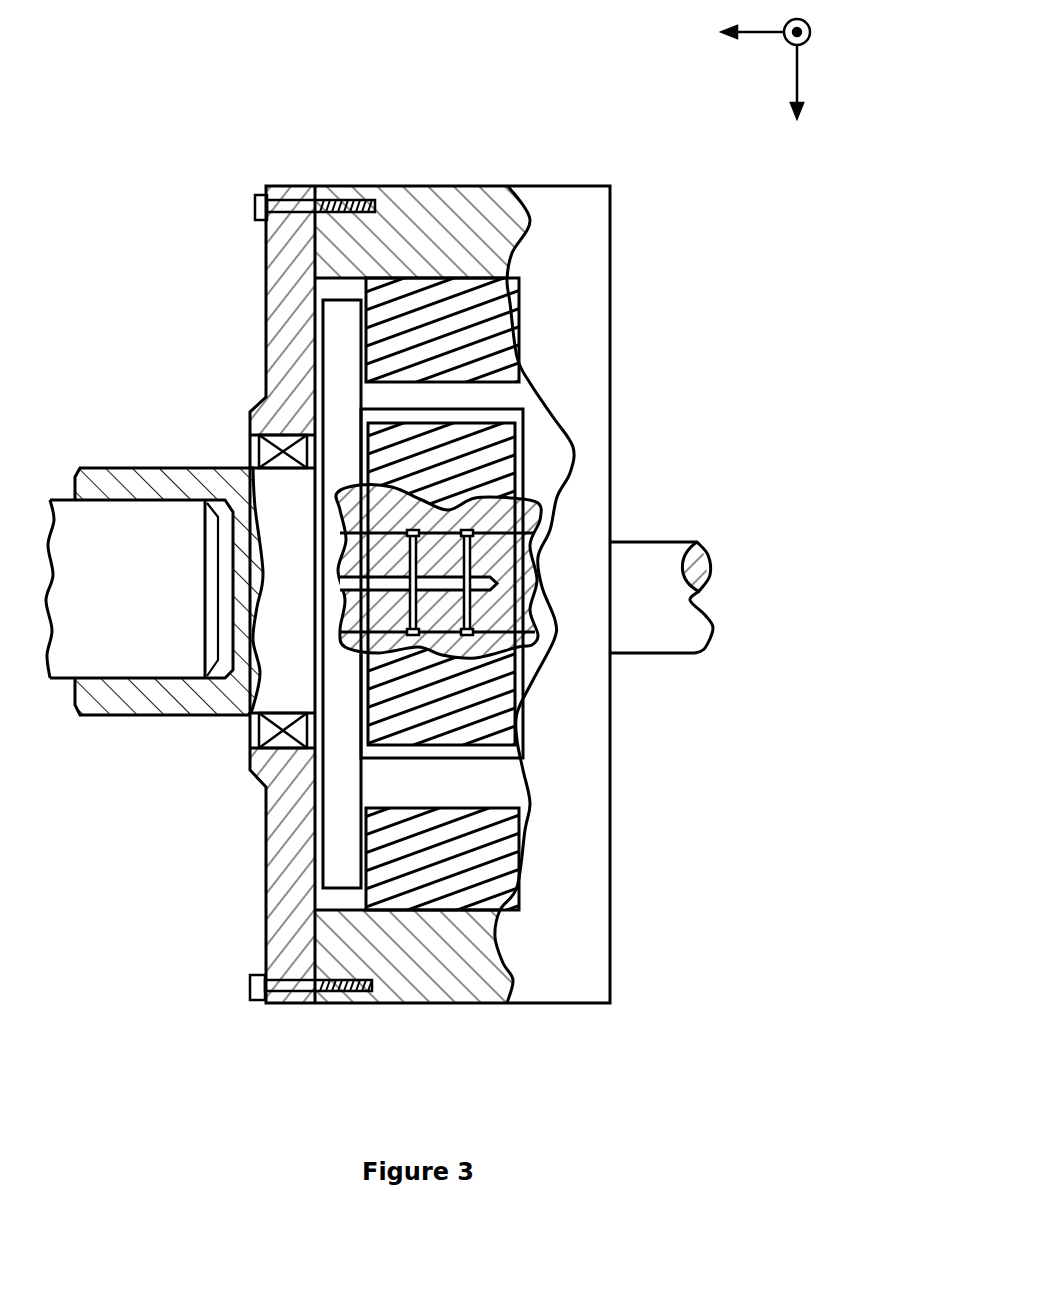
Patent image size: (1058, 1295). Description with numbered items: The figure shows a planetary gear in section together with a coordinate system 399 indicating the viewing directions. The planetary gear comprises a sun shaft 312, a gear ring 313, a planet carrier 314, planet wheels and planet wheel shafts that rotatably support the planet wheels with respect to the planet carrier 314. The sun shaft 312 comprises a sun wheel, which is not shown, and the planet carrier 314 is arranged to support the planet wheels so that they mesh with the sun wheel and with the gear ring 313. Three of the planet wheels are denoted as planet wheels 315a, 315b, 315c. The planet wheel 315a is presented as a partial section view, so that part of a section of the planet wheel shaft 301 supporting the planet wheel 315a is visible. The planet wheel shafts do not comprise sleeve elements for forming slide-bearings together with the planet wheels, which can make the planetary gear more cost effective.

The planet wheel shaft 301 is at (397, 569).
The sun shaft 312 is at (635, 563).
The gear ring 313 is at (443, 247).
The planet carrier 314 is at (444, 974).
The planet wheel 315a is at (464, 467).
The planet wheel 315b is at (464, 349).
The planet wheel 315c is at (464, 881).
The coordinate system 399 is at (771, 84).